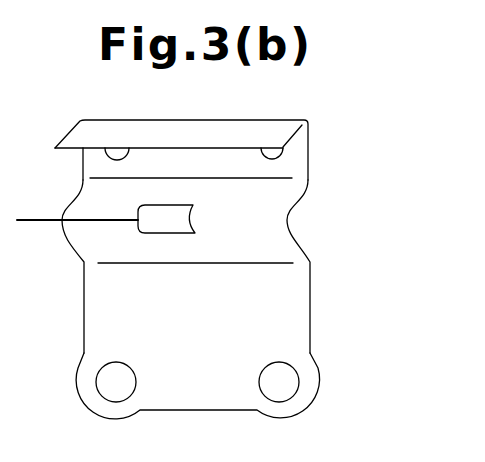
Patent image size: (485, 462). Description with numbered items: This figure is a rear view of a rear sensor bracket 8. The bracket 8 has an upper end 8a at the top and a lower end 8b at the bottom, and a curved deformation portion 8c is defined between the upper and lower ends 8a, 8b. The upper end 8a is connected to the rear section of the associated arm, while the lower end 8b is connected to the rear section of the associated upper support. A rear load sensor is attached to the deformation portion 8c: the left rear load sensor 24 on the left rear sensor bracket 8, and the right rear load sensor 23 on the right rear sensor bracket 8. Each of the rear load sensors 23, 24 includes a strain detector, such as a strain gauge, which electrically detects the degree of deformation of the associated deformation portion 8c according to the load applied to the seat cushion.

The rear sensor bracket 8 is at (220, 250).
The upper end 8a is at (308, 158).
The lower end 8b is at (315, 377).
The curved deformation portion 8c is at (292, 249).
The left rear load sensor 24 is at (210, 212).
The right rear load sensor 23 is at (175, 205).